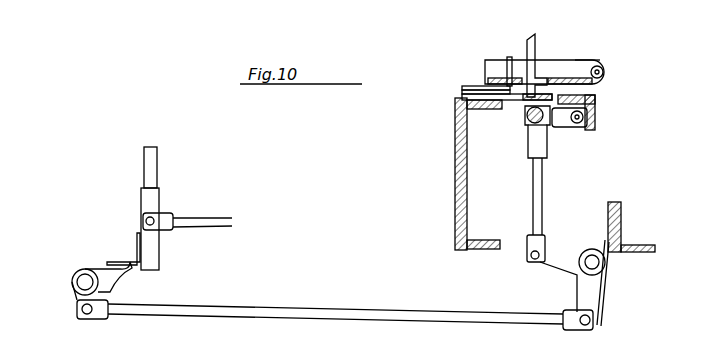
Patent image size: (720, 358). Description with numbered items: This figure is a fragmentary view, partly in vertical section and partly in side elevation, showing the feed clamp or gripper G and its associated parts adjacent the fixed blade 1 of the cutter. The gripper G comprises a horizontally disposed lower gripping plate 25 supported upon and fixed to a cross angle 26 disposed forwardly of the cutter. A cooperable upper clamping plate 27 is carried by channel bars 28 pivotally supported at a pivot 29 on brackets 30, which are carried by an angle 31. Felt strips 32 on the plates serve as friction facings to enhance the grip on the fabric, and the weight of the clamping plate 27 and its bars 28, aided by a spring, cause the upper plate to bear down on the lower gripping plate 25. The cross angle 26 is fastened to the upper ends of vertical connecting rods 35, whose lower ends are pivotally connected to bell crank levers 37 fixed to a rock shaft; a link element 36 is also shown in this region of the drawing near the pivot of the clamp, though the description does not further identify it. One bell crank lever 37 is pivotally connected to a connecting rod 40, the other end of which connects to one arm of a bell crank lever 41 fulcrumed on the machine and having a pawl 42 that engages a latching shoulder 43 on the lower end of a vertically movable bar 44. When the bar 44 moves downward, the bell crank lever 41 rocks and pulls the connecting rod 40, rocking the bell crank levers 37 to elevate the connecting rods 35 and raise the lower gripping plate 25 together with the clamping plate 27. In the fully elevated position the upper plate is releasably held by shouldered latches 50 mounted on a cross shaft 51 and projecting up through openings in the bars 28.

The fixed blade 1 is at (452, 126).
The lower gripping plate 25 is at (526, 108).
The cross angle 26 is at (546, 128).
The clamping plate 27 is at (472, 84).
The channel bars 28 is at (548, 72).
The pivot 29 is at (604, 73).
The brackets 30 is at (596, 90).
The angle 31 is at (597, 115).
The felt strips 32 is at (462, 92).
The connecting rods 35 is at (546, 186).
The link 36 is at (563, 120).
The bell crank levers 37 is at (598, 288).
The connecting rod 40 is at (284, 304).
The bell crank lever 41 is at (75, 300).
The pawl 42 is at (117, 263).
The latching shoulder 43 is at (143, 252).
The vertically movable bar 44 is at (158, 154).
The latches 50 is at (527, 44).
The cross shaft 51 is at (532, 130).
The feed clamps or grippers G is at (580, 62).